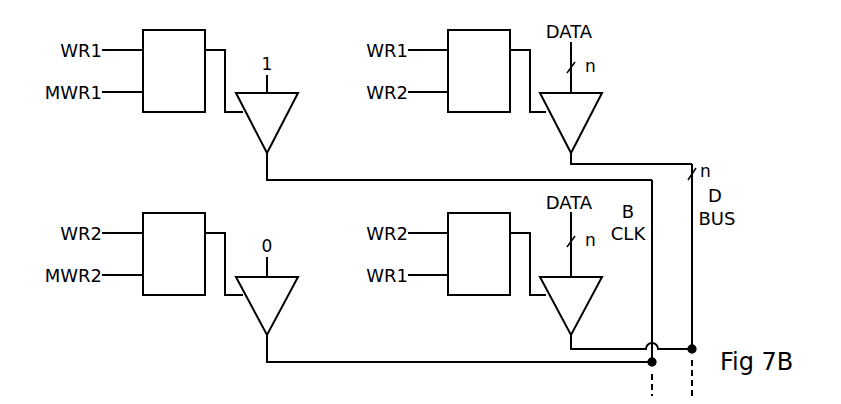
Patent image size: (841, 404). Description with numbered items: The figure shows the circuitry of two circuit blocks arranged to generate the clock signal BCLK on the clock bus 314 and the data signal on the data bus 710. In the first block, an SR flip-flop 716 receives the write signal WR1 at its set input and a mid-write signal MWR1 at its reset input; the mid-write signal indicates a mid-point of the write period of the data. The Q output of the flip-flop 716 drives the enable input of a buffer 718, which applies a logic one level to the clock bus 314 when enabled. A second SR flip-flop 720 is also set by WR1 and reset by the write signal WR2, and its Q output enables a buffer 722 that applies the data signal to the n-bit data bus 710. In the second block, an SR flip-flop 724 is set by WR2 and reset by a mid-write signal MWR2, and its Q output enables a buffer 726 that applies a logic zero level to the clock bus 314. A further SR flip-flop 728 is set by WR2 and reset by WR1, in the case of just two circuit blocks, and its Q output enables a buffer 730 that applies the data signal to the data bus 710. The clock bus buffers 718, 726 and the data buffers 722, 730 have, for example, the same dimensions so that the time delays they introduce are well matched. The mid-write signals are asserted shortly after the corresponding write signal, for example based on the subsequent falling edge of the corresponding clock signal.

The SR flip-flop 716 is at (175, 31).
The buffer 718 is at (278, 128).
The SR flip-flop 720 is at (479, 31).
The buffer 722 is at (581, 127).
The SR flip-flop 724 is at (175, 213).
The buffer 726 is at (280, 277).
The SR flip-flop 728 is at (472, 213).
The buffer 730 is at (582, 311).
The clock bus 314 is at (653, 283).
The data bus 710 is at (693, 298).